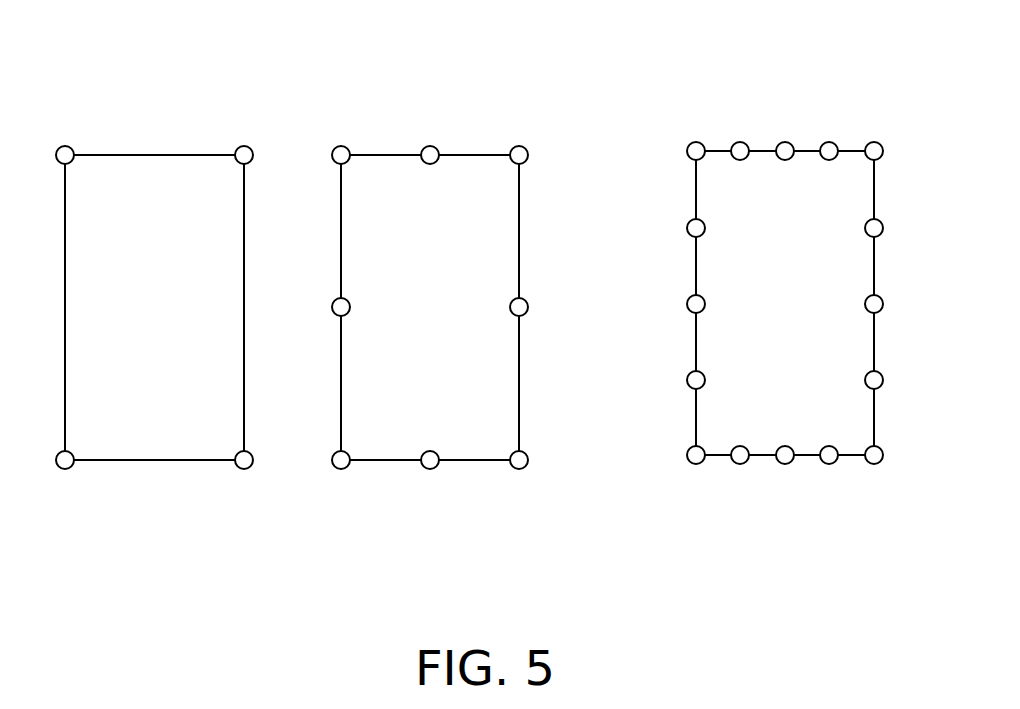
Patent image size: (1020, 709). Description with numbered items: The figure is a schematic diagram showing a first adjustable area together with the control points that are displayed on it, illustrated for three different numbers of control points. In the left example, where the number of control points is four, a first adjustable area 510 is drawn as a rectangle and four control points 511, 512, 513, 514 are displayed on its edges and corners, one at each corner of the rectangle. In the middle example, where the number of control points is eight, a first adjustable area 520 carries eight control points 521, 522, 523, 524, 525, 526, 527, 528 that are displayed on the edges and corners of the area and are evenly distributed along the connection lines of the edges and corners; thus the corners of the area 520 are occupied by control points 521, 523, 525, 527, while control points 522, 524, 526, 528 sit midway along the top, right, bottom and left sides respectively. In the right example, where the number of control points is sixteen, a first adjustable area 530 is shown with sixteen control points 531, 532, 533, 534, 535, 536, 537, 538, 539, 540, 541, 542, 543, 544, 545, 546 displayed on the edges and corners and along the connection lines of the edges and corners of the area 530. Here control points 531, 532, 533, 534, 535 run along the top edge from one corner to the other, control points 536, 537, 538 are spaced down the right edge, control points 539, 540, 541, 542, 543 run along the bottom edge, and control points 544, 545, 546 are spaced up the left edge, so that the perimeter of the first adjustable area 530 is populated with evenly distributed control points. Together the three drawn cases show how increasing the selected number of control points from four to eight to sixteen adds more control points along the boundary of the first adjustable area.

The first adjustable area 510 is at (147, 415).
The control point 511 is at (65, 146).
The control point 512 is at (244, 146).
The control point 513 is at (244, 469).
The control point 514 is at (65, 469).
The first adjustable area 520 is at (384, 425).
The control point 521 is at (341, 146).
The control point 522 is at (430, 146).
The control point 523 is at (519, 146).
The control point 524 is at (528, 302).
The control point 525 is at (519, 469).
The control point 526 is at (430, 469).
The control point 527 is at (341, 469).
The control point 528 is at (332, 307).
The first adjustable area 530 is at (728, 413).
The control point 531 is at (696, 142).
The control point 532 is at (740, 142).
The control point 533 is at (785, 142).
The control point 534 is at (829, 142).
The control point 535 is at (874, 142).
The control point 536 is at (883, 232).
The control point 537 is at (883, 308).
The control point 538 is at (883, 384).
The control point 539 is at (874, 464).
The control point 540 is at (829, 464).
The control point 541 is at (785, 464).
The control point 542 is at (740, 464).
The control point 543 is at (696, 464).
The control point 544 is at (687, 382).
The control point 545 is at (687, 306).
The control point 546 is at (687, 230).